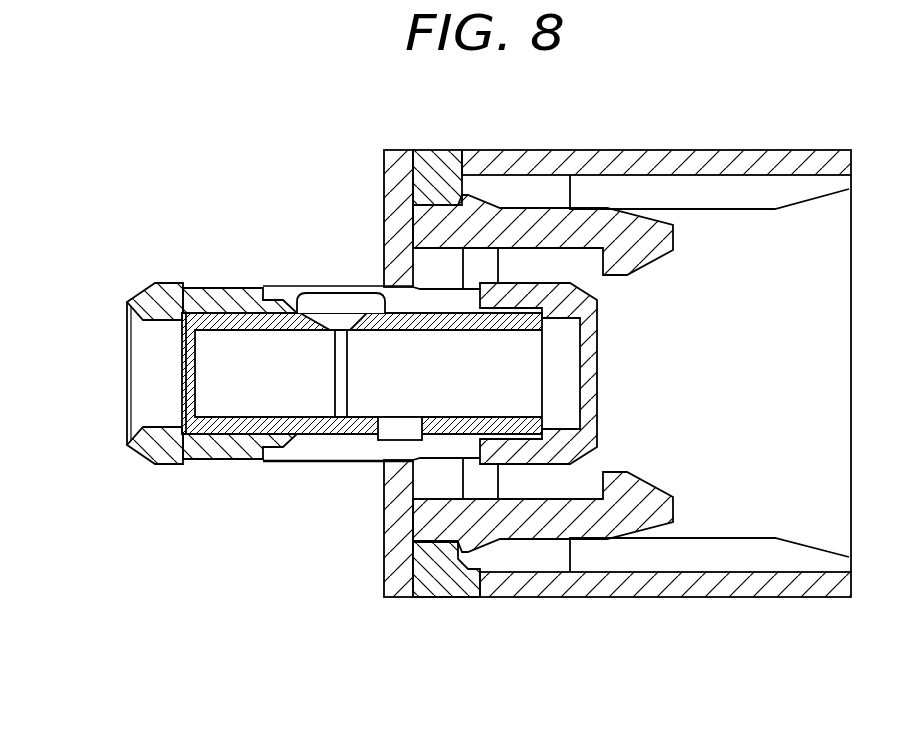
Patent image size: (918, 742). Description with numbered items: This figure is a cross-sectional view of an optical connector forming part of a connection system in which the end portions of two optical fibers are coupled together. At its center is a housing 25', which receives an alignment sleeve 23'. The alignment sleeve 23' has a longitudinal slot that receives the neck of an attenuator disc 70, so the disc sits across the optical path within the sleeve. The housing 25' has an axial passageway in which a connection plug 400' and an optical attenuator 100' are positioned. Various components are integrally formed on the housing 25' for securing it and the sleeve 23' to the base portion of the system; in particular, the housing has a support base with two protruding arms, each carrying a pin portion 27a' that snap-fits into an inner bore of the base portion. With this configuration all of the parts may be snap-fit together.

The housing 25' is at (135, 337).
The optical attenuator 100' is at (277, 377).
The attenuator disc 70 is at (328, 313).
The connection plug 400' is at (541, 316).
The alignment sleeve 23' is at (240, 410).
The pin portion 27a' is at (478, 606).